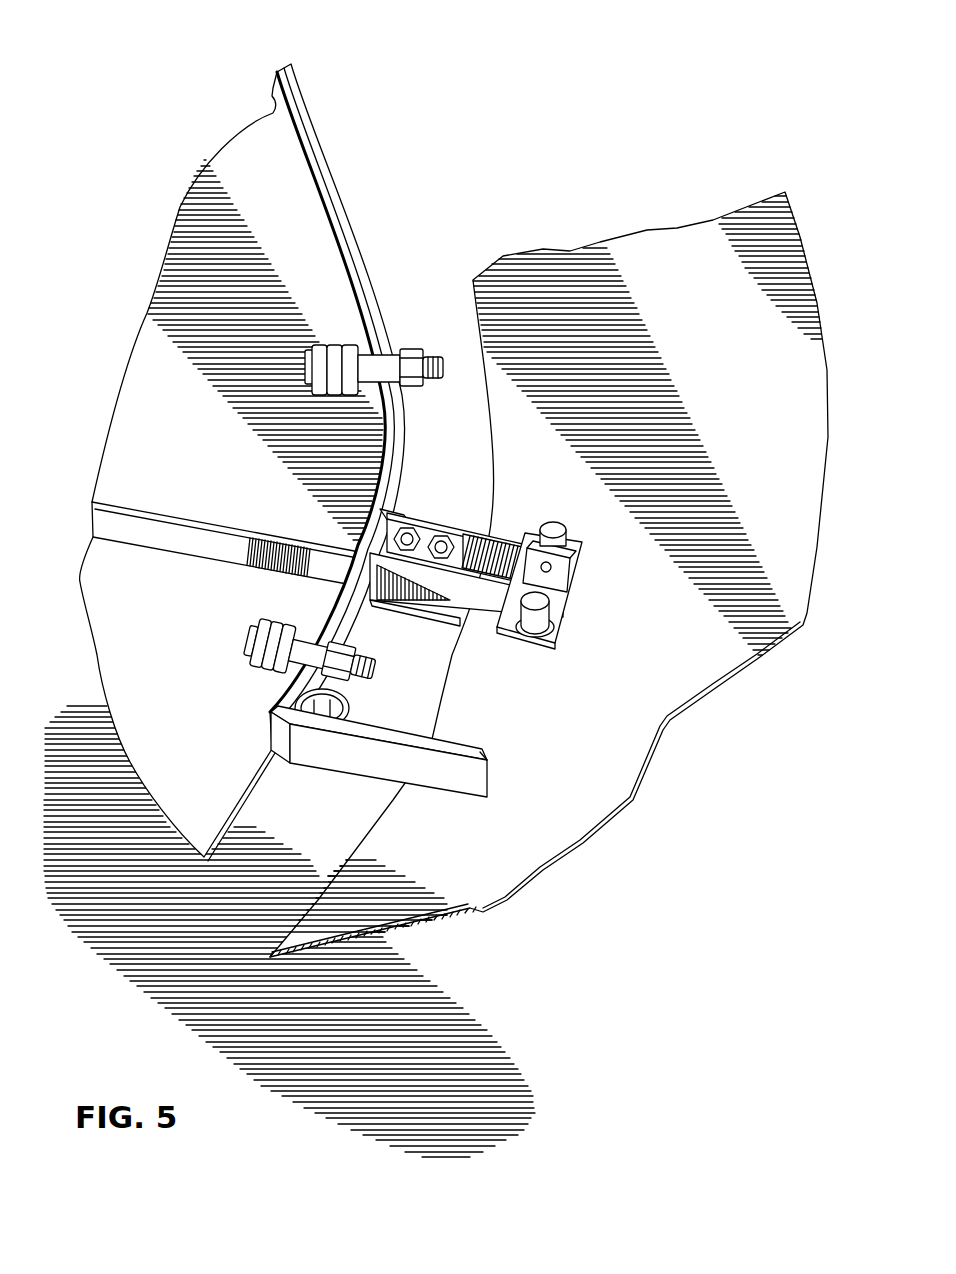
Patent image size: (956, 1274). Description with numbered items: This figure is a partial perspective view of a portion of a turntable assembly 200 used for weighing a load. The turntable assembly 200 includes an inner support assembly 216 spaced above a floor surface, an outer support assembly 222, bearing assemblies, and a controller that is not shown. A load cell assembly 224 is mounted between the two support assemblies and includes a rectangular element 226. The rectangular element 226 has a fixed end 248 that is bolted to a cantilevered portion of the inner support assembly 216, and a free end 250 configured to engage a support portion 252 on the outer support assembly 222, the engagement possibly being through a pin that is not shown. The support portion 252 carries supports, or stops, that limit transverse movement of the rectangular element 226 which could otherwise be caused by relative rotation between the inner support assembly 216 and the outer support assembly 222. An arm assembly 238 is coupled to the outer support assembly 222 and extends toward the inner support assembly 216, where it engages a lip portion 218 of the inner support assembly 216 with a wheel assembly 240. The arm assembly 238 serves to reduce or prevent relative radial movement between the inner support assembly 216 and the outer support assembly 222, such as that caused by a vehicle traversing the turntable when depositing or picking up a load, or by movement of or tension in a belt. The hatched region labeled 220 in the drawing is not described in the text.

The turntable assembly 200 is at (433, 584).
The inner support assembly 216 is at (123, 638).
The lip portion 218 is at (347, 153).
The ground surface 220 is at (205, 931).
The outer support assembly 222 is at (682, 231).
The load cell assembly 224 is at (504, 542).
The rectangular element 226 is at (477, 528).
The arm assembly 238 is at (457, 795).
The wheel assembly 240 is at (347, 712).
The fixed end 248 is at (387, 533).
The free end 250 is at (563, 583).
The support portion 252 is at (620, 734).